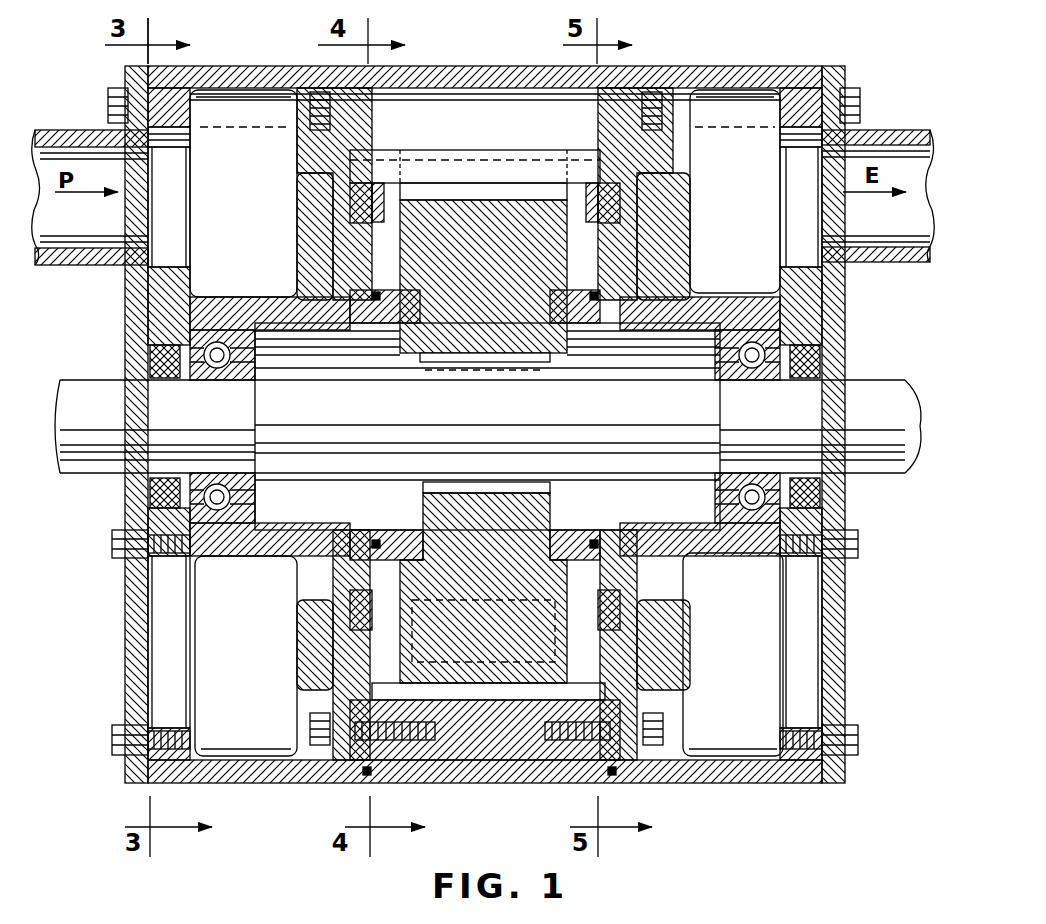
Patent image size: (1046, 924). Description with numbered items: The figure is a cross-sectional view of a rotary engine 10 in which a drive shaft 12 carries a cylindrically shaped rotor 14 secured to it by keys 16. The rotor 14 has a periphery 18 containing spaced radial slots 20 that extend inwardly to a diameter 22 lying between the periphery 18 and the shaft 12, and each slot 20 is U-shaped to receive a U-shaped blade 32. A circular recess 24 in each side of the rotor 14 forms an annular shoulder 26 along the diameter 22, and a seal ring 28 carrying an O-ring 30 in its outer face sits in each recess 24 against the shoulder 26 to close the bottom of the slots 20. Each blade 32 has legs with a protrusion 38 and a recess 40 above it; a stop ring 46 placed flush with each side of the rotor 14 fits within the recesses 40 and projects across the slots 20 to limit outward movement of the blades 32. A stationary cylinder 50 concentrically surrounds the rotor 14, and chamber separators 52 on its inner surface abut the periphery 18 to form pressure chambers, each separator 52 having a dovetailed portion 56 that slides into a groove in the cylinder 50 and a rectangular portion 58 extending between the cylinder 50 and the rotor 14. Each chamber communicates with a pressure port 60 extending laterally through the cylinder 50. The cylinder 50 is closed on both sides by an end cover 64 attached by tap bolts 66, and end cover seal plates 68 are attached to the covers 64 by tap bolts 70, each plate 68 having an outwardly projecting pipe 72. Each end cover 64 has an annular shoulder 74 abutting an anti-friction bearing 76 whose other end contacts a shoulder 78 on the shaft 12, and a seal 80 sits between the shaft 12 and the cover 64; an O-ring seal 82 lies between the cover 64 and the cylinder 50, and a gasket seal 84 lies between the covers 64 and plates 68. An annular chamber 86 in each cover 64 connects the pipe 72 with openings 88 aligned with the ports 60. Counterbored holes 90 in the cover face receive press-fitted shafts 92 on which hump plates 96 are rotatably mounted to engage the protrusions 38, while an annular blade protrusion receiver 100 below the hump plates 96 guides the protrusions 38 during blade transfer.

The rotary engine 10 is at (710, 62).
The drive shaft 12 is at (878, 390).
The rotor 14 is at (497, 270).
The keys 16 is at (505, 465).
The periphery 18 is at (492, 158).
The radial slots 20 is at (522, 190).
The diameter 22 is at (560, 530).
The circular recess 24 is at (560, 335).
The annular shoulder 26 is at (405, 562).
The seal ring 28 is at (388, 325).
The O-ring 30 is at (225, 575).
The blade 32 is at (452, 150).
The protrusion 38 is at (320, 240).
The recess 40 is at (352, 182).
The stop ring 46 is at (383, 210).
The stationary cylinder 50 is at (470, 66).
The chamber separators 52 is at (495, 700).
The dovetailed portion 56 is at (527, 700).
The rectangular portion 58 is at (510, 690).
The pressure port 60 is at (515, 100).
The end cover 64 is at (232, 66).
The tap bolts 66 is at (315, 92).
The end cover seal plates 68 is at (130, 622).
The tap bolts 70 is at (110, 108).
The pipe 72 is at (60, 132).
The annular shoulder 74 is at (190, 300).
The anti-friction bearing 76 is at (222, 330).
The shoulder 78 is at (245, 382).
The seal 80 is at (150, 357).
The O-ring seal 82 is at (352, 775).
The gasket seal 84 is at (145, 783).
The annular chamber 86 is at (200, 655).
The openings 88 is at (355, 107).
The counterbored holes 90 is at (300, 220).
The shaft 92 is at (305, 640).
The hump plate 96 is at (352, 205).
The blade protrusion receiver 100 is at (350, 263).